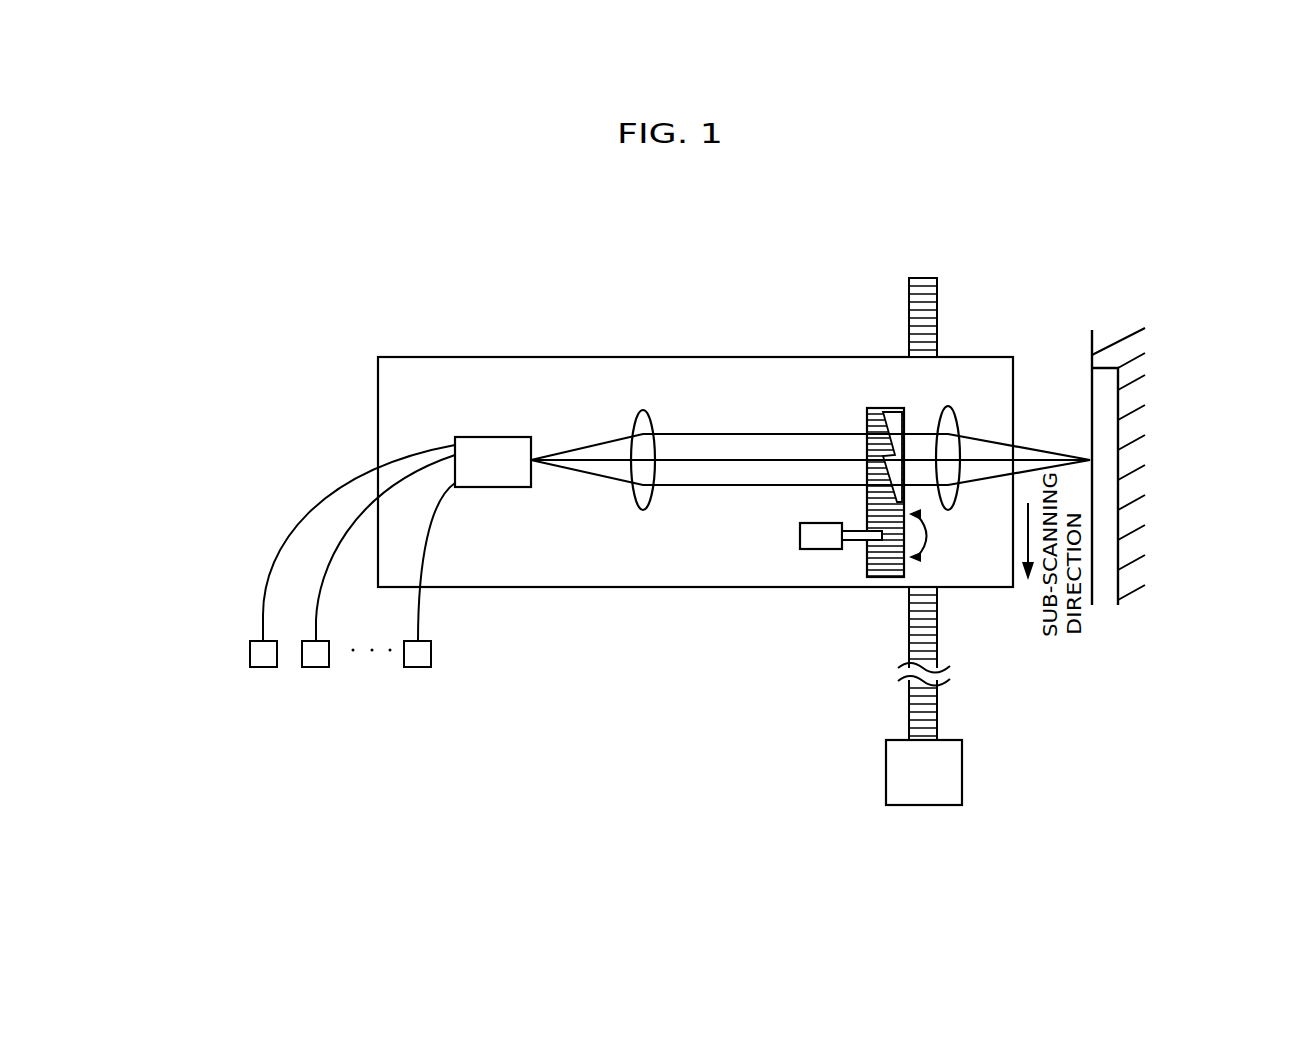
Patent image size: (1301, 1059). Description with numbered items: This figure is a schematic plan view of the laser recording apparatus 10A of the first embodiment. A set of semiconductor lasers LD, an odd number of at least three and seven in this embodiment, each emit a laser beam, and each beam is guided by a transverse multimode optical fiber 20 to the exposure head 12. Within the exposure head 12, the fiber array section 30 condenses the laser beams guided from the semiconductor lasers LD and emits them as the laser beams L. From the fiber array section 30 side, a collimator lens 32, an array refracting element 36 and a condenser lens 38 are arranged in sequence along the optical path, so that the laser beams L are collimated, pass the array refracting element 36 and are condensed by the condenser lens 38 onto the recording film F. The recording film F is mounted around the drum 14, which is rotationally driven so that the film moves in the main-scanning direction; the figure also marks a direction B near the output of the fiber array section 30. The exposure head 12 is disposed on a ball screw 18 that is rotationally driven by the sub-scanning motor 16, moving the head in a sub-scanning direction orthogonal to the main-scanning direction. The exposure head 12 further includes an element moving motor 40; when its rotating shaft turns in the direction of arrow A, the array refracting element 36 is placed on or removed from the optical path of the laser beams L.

The laser recording apparatus 10A is at (1007, 195).
The exposure head 12 is at (757, 345).
The drum 14 is at (1130, 318).
The sub-scanning motor 16 is at (962, 772).
The ball screw 18 is at (937, 630).
The optical fiber 20 is at (265, 545).
The fiber array section 30 is at (518, 423).
The collimator lens 32 is at (637, 417).
The array refracting element 36 is at (913, 385).
The condenser lens 38 is at (986, 427).
The element moving motor 40 is at (807, 549).
The laser beam L is at (605, 473).
The recording film F is at (1110, 560).
The semiconductor laser LD is at (457, 688).
The direction of arrow A is at (929, 553).
The direction B is at (556, 472).